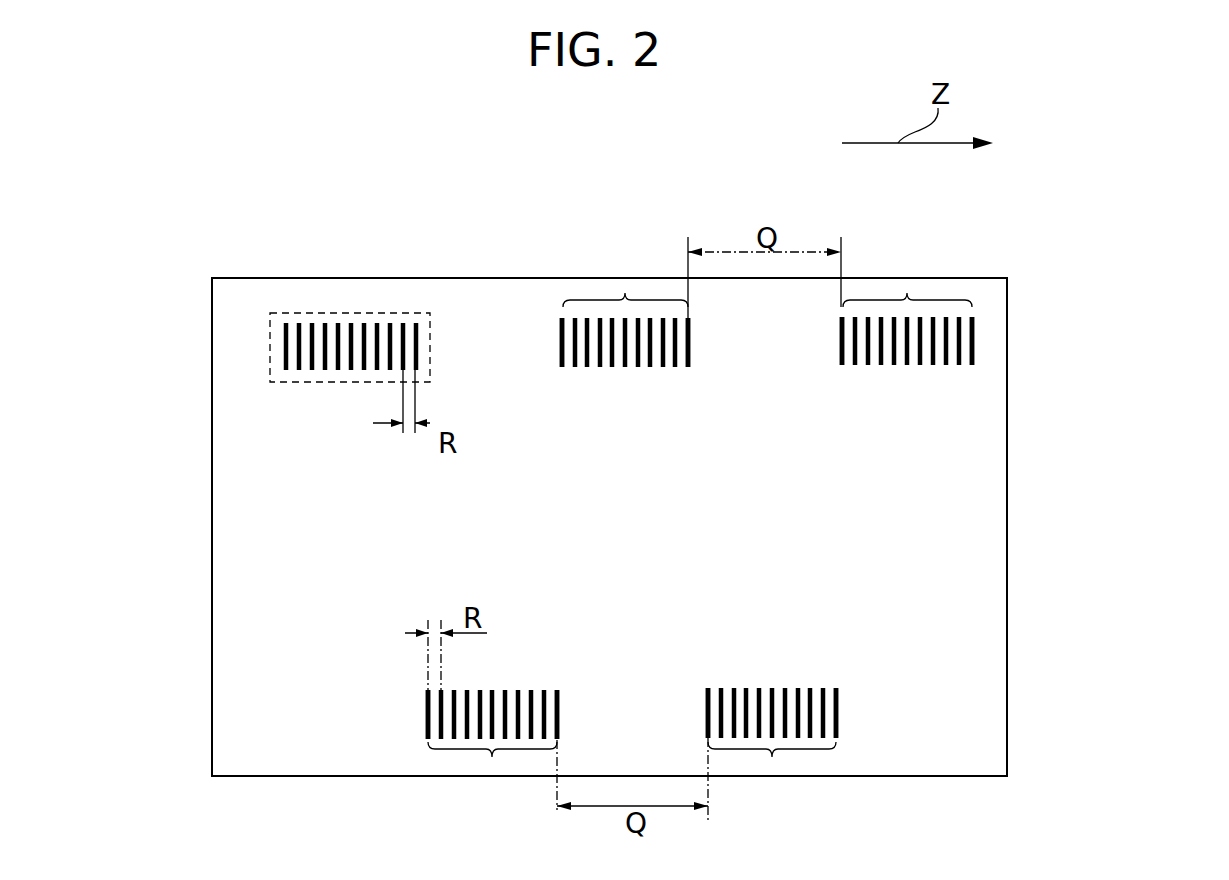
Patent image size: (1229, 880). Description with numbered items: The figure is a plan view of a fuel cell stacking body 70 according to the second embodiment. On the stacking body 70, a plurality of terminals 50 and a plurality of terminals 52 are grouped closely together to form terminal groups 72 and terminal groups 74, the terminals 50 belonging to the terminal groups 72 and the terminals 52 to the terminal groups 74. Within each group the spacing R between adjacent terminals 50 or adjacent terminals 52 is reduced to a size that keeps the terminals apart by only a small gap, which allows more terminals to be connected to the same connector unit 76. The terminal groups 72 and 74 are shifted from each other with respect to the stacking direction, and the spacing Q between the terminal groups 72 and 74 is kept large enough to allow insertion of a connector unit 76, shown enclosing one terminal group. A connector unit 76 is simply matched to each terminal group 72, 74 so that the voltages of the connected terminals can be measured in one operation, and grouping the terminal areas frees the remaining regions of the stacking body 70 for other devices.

The terminals 50 is at (397, 333).
The terminals 52 is at (558, 700).
The fuel cell stacking body 70 is at (1090, 389).
The terminal groups 72 is at (625, 290).
The terminal groups 74 is at (490, 760).
The connector unit 76 is at (313, 312).